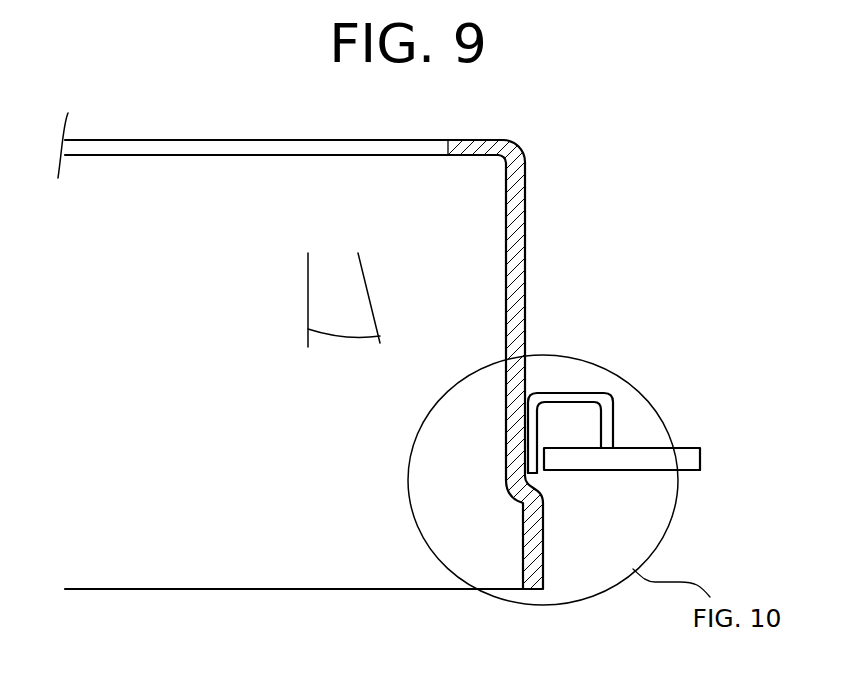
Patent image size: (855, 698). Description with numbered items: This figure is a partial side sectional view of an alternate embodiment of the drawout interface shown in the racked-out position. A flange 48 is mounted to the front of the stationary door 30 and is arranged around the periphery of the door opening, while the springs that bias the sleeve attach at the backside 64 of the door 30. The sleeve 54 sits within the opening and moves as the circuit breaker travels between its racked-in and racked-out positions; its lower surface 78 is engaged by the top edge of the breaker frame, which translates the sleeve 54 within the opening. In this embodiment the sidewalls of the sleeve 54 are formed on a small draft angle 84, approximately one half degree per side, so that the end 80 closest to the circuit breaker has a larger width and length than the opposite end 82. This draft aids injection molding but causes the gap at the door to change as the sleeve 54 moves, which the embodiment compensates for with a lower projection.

The opposite end 82 is at (231, 140).
The sleeve 54 is at (525, 216).
The lower surface 78 is at (532, 590).
The end 80 is at (235, 590).
The angle 84 is at (343, 338).
The flange 48 is at (568, 397).
The door 30 is at (684, 448).
The backside 64 is at (658, 472).